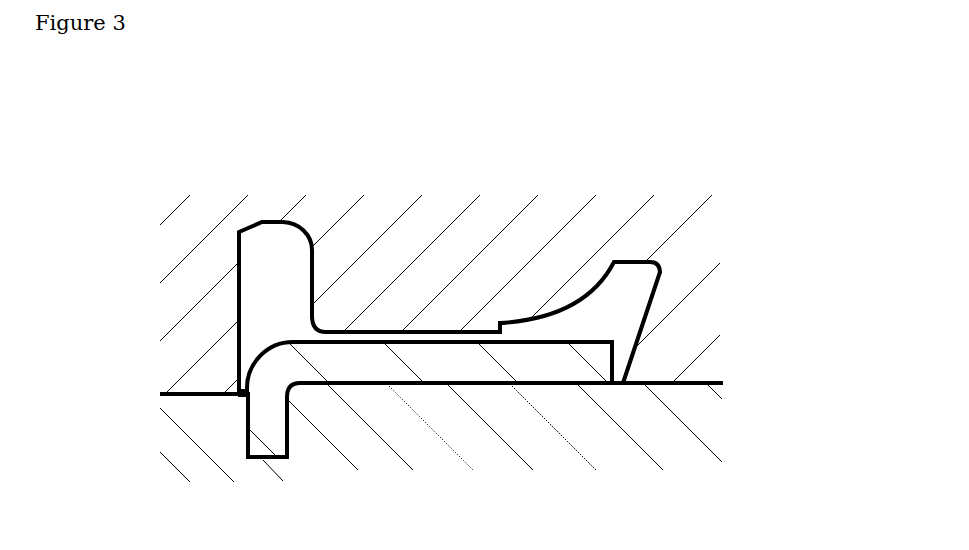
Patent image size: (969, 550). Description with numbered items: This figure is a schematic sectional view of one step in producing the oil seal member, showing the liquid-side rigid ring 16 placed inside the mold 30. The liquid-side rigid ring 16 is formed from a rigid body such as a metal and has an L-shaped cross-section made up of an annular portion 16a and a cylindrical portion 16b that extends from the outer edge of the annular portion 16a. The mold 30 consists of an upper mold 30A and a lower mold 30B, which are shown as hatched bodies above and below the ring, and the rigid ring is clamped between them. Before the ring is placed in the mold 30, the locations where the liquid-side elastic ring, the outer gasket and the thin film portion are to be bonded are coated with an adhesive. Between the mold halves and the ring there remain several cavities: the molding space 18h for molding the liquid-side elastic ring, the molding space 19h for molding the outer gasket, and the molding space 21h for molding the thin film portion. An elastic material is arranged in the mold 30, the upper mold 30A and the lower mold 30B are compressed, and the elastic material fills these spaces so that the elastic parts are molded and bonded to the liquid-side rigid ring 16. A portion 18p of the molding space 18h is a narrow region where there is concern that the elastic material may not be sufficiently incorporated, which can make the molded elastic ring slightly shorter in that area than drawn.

The liquid-side rigid ring 16 is at (437, 299).
The annular portion 16a is at (422, 352).
The cylindrical portion 16b is at (250, 414).
The molding space for the outer gasket 19h is at (246, 290).
The molding space for the thin film portion 21h is at (367, 332).
The molding space for the liquid-side elastic ring 18h is at (585, 312).
The portion of the molding space 18p is at (622, 372).
The mold 30 is at (432, 275).
The upper mold 30A is at (720, 326).
The lower mold 30B is at (715, 436).